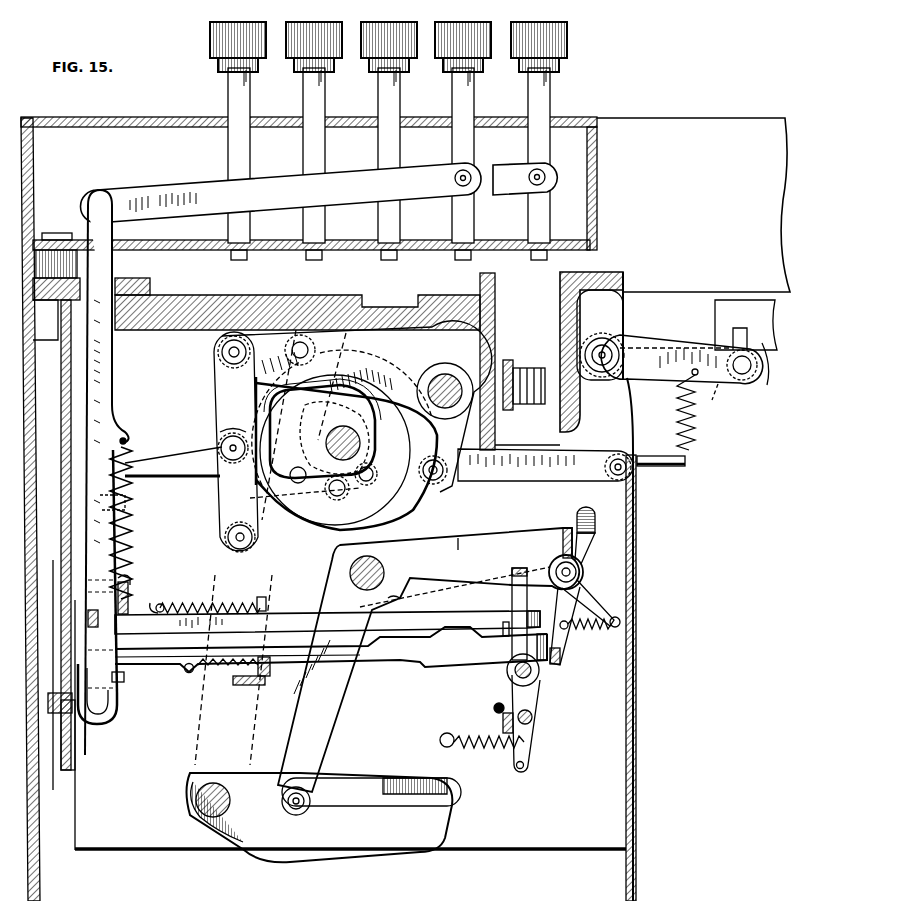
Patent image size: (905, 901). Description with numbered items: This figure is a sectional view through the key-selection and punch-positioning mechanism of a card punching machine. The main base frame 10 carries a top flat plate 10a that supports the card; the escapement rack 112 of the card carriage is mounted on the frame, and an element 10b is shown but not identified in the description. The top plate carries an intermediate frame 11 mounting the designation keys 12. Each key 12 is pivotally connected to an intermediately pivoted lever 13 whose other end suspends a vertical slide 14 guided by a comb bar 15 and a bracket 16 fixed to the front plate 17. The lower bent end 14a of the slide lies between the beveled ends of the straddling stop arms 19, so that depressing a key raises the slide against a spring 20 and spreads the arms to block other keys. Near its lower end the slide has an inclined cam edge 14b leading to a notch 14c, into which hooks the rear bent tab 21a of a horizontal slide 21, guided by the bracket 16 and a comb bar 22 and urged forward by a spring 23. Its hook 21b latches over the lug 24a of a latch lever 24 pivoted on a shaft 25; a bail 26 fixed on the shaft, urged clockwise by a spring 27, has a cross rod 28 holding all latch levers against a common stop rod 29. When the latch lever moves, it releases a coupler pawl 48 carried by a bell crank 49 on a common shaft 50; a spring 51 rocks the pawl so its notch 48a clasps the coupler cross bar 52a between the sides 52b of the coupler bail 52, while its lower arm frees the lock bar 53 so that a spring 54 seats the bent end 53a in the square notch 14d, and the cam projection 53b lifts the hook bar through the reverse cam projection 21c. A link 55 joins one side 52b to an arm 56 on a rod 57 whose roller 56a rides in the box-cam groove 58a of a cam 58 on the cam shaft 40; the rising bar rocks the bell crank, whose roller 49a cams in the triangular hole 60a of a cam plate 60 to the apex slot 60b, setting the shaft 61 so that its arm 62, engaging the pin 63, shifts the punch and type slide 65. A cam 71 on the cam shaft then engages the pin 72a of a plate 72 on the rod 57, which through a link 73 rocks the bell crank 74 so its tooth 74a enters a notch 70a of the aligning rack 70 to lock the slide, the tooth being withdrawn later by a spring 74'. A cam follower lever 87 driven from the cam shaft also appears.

The main base frame 10 is at (632, 707).
The top flat plate 10a is at (260, 322).
The housing blocks 10b is at (152, 292).
The intermediate frame 11 is at (655, 128).
The designation key 12 is at (530, 32).
The intermediately pivoted lever 13 is at (415, 188).
The vertical slide 14 is at (88, 218).
The lower rearwardly bent end 14a is at (54, 775).
The inclined cam edge 14b is at (85, 618).
The notch 14c is at (130, 592).
The square notch 14d is at (100, 690).
The comb bar 15 is at (130, 578).
The bracket 16 is at (125, 607).
The front plate 17 is at (75, 760).
The straddling stop arms 19 is at (58, 625).
The spring 20 is at (130, 490).
The horizontal slide 21 is at (175, 605).
The rear bent tab 21a is at (327, 623).
The hook 21b is at (515, 612).
The reverse cam projection 21c is at (448, 620).
The comb bar 22 is at (266, 608).
The spring 23 is at (208, 590).
The latch lever 24 is at (520, 664).
The lug 24a is at (489, 635).
The shaft 25 is at (540, 673).
The bail 26 is at (535, 740).
The spring 27 is at (482, 759).
The cross rod 28 is at (533, 717).
The common stop rod 29 is at (494, 708).
The cam shaft 40 is at (340, 440).
The coupler pawl 48 is at (583, 572).
The notch 48a is at (588, 515).
The bell crank 49 is at (398, 596).
The roller 49a is at (310, 801).
The common shaft 50 is at (372, 565).
The spring 51 is at (590, 630).
The coupler bail 52 is at (300, 660).
The coupler cross bar 52a is at (560, 548).
The sides of coupler bail 52b is at (469, 532).
The lock bar 53 is at (410, 660).
The left bent end 53a is at (98, 724).
The cam projection 53b is at (432, 643).
The spring 54 is at (220, 690).
The link 55 is at (228, 495).
The arm 56 is at (420, 360).
The roller 56a is at (360, 350).
The rod 57 is at (445, 386).
The cam 58 is at (225, 444).
The box-cam groove 58a is at (254, 404).
The cam plate 60 is at (268, 860).
The triangular hole 60a is at (378, 810).
The apex slot 60b is at (445, 803).
The shaft 61 is at (208, 805).
The arm 62 is at (195, 765).
The pin 63 is at (312, 340).
The punch and type slide 65 is at (666, 318).
The aligning rack 70 is at (752, 374).
The notch 70a is at (740, 328).
The cam 71 is at (372, 450).
The plate 72 is at (455, 442).
The pin 72a is at (360, 490).
The link 73 is at (555, 470).
The bell crank 74 is at (664, 409).
The tooth 74a is at (719, 400).
The spring 74' is at (683, 451).
The cam follower lever 87 is at (186, 476).
The escapement rack 112 is at (507, 368).